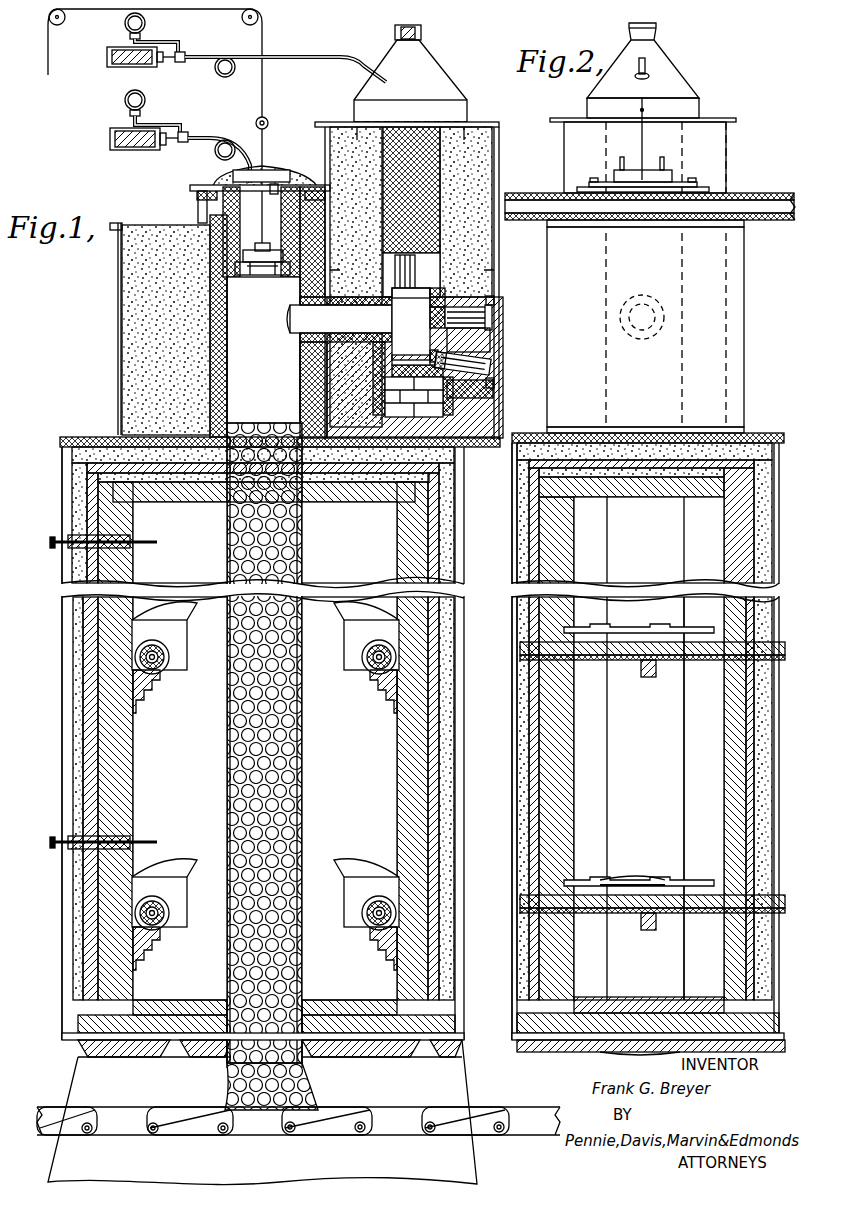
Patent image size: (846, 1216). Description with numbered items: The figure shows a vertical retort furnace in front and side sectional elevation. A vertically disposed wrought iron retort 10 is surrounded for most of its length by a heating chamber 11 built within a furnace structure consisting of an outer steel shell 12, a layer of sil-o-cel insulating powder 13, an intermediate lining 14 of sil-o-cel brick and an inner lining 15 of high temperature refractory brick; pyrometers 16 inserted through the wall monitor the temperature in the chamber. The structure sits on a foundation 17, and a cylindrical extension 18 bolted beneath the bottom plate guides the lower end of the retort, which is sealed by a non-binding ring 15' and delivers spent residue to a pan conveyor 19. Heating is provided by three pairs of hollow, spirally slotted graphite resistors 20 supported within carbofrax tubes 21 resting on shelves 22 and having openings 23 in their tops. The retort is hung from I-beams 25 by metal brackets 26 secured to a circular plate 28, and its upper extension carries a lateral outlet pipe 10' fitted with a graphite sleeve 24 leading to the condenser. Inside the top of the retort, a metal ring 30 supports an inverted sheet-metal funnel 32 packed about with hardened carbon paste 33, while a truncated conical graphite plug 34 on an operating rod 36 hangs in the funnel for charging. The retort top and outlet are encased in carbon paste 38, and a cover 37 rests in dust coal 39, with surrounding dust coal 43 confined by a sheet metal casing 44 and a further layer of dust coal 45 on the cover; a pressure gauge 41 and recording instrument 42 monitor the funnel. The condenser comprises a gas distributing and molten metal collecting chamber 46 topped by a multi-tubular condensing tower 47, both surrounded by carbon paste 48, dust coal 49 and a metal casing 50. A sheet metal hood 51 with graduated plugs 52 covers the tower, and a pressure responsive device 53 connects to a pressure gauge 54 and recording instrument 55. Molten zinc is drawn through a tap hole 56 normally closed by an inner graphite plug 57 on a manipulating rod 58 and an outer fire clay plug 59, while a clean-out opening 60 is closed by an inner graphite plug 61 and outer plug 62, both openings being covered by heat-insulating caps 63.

In FIG. 1, the cylindrical retort 10 is at (238, 751).
In FIG. 2, the cylindrical retort 10 is at (649, 748).
In FIG. 1, the lateral outlet pipe 10' is at (263, 350).
In FIG. 1, the heating chamber 11 is at (349, 751).
In FIG. 2, the heating chamber 11 is at (700, 798).
In FIG. 1, the outer steel shell 12 is at (73, 745).
In FIG. 2, the outer steel shell 12 is at (518, 776).
In FIG. 1, the insulating powder layer 13 is at (80, 507).
In FIG. 2, the insulating powder layer 13 is at (516, 546).
In FIG. 1, the intermediate lining 14 is at (95, 748).
In FIG. 2, the intermediate lining 14 is at (530, 809).
In FIG. 1, the inner lining 15 is at (263, 741).
In FIG. 2, the inner lining 15 is at (615, 738).
In FIG. 1, the sealing ring 15' is at (265, 986).
In FIG. 1, the pyrometers 16 is at (140, 542).
In FIG. 1, the foundation 17 is at (80, 1082).
In FIG. 1, the cylindrical extension 18 is at (226, 1086).
In FIG. 1, the pan conveyor 19 is at (490, 1115).
In FIG. 1, the graphite resistors 20 is at (170, 665).
In FIG. 2, the graphite resistors 20 is at (600, 663).
In FIG. 1, the carbofrax tubes 21 is at (170, 652).
In FIG. 2, the carbofrax tubes 21 is at (718, 627).
In FIG. 1, the shelves 22 is at (156, 695).
In FIG. 1, the openings 23 is at (182, 628).
In FIG. 2, the openings 23 is at (598, 880).
In FIG. 1, the graphite cylindrical sleeve 24 is at (352, 306).
In FIG. 1, the I-beams 25 is at (190, 190).
In FIG. 2, the I-beams 25 is at (765, 210).
In FIG. 1, the metal brackets 26 is at (288, 175).
In FIG. 2, the metal brackets 26 is at (710, 189).
In FIG. 1, the circular plate 28 is at (200, 190).
In FIG. 2, the circular plate 28 is at (700, 193).
In FIG. 1, the metal ring 30 is at (270, 280).
In FIG. 1, the inverted sheet-metal funnel 32 is at (274, 242).
In FIG. 1, the hardened carbon paste 33 is at (255, 276).
In FIG. 1, the truncated conical plug 34 is at (278, 284).
In FIG. 1, the operating rod 36 is at (268, 120).
In FIG. 1, the cover 37 is at (264, 152).
In FIG. 2, the cover 37 is at (674, 176).
In FIG. 1, the hardened carbon paste 38 is at (227, 386).
In FIG. 1, the dust coal 39 is at (267, 188).
In FIG. 1, the pressure gauge 41 is at (128, 152).
In FIG. 1, the pressure recording instrument 42 is at (124, 100).
In FIG. 1, the dust coal 43 is at (130, 303).
In FIG. 1, the sheet metal casing 44 is at (118, 346).
In FIG. 2, the sheet metal casing 44 is at (745, 319).
In FIG. 1, the dust coal layer 45 is at (222, 170).
In FIG. 1, the gas distributing and molten metal collecting chamber 46 is at (411, 348).
In FIG. 1, the multi-tubular condensing tower 47 is at (411, 298).
In FIG. 1, the hardened carbon paste layer 48 is at (440, 240).
In FIG. 1, the dust coal mass 49 is at (480, 182).
In FIG. 1, the metal casing 50 is at (494, 152).
In FIG. 2, the metal casing 50 is at (727, 152).
In FIG. 1, the sheet metal hood 51 is at (468, 102).
In FIG. 2, the sheet metal hood 51 is at (700, 102).
In FIG. 1, the plugs 52 is at (421, 32).
In FIG. 2, the plugs 52 is at (657, 29).
In FIG. 1, the pressure responsive device 53 is at (383, 78).
In FIG. 2, the pressure responsive device 53 is at (648, 70).
In FIG. 1, the pressure gauge 54 is at (107, 57).
In FIG. 1, the pressure recording instrument 55 is at (124, 22).
In FIG. 1, the tap hole 56 is at (460, 375).
In FIG. 1, the inner graphite plug 57 is at (437, 356).
In FIG. 1, the manipulating rod 58 is at (490, 341).
In FIG. 1, the outer plug 59 is at (491, 366).
In FIG. 1, the clean-out opening 60 is at (470, 302).
In FIG. 1, the inner graphite plug 61 is at (430, 317).
In FIG. 1, the outer plug 62 is at (492, 315).
In FIG. 1, the heat-insulating caps 63 is at (494, 331).